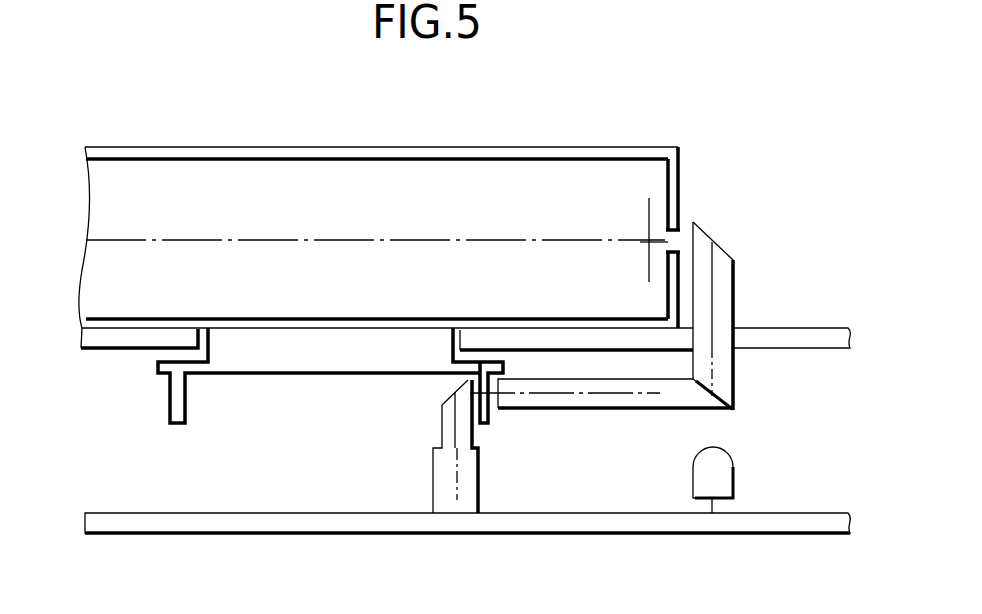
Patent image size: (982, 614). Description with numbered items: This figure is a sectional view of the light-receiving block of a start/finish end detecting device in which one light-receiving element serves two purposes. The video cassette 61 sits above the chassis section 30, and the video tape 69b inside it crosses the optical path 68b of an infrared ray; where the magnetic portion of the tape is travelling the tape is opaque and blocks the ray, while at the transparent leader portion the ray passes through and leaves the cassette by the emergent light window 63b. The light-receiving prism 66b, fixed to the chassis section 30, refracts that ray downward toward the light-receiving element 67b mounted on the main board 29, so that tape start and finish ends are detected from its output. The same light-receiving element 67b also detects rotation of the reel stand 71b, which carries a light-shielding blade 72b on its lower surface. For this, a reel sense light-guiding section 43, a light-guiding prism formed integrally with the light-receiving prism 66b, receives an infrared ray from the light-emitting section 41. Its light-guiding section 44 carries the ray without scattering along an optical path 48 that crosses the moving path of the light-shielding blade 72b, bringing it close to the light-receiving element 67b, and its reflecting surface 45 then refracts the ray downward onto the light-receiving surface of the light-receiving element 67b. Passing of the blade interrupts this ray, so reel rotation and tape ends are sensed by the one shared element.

The video cassette 61 is at (248, 148).
The optical path 68b is at (378, 240).
The emergent light window 63b is at (670, 243).
The video tape 69b is at (650, 207).
The light-receiving prism 66b is at (735, 283).
The chassis section 30 is at (835, 328).
The reflecting surface 45 is at (732, 392).
The light-guiding section 44 is at (557, 410).
The reel sense light-guiding section 43 is at (623, 410).
The optical path 48 is at (662, 393).
The light-shielding blade 72b is at (483, 430).
The reel stand 71b is at (242, 375).
The light-emitting section 41 is at (433, 483).
The main board 29 is at (837, 513).
The light-receiving element 67b is at (733, 485).